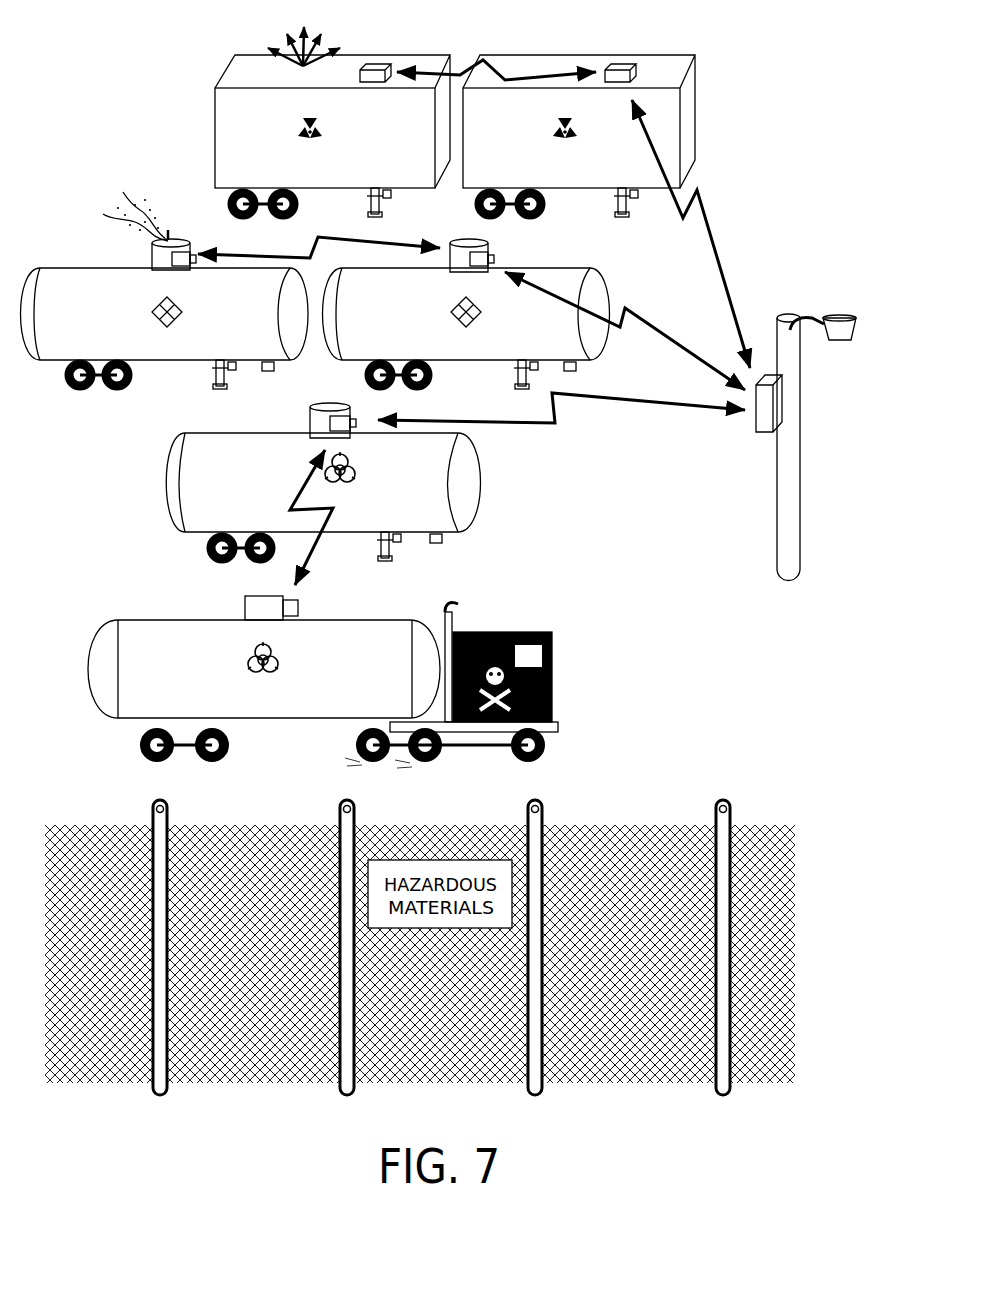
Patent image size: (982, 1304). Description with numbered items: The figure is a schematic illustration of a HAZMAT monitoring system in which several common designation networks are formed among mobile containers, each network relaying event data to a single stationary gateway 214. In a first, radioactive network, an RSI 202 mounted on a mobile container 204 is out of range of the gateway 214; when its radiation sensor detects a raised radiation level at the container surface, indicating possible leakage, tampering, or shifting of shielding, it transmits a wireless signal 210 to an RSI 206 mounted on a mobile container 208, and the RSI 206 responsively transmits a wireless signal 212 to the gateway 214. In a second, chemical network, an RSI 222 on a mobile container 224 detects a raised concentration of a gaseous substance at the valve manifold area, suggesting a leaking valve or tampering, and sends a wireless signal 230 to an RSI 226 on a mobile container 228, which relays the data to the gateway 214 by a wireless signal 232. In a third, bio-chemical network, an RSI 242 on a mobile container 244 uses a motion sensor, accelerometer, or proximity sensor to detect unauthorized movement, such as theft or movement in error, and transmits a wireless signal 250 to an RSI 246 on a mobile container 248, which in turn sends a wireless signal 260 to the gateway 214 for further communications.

The RSI 202 is at (381, 64).
The mobile container 204 is at (288, 163).
The RSI 206 is at (625, 63).
The mobile container 208 is at (527, 163).
The wireless signal 210 is at (450, 76).
The wireless signal 212 is at (703, 222).
The stationary gateway 214 is at (756, 432).
The RSI 222 is at (193, 243).
The mobile container 224 is at (115, 337).
The RSI 226 is at (494, 258).
The mobile container 228 is at (409, 337).
The wireless signal 230 is at (217, 247).
The wireless signal 232 is at (638, 318).
The RSI 242 is at (298, 608).
The mobile container 244 is at (194, 695).
The RSI 246 is at (356, 422).
The mobile container 248 is at (255, 509).
The wireless signal 250 is at (312, 557).
The wireless signal 260 is at (615, 400).